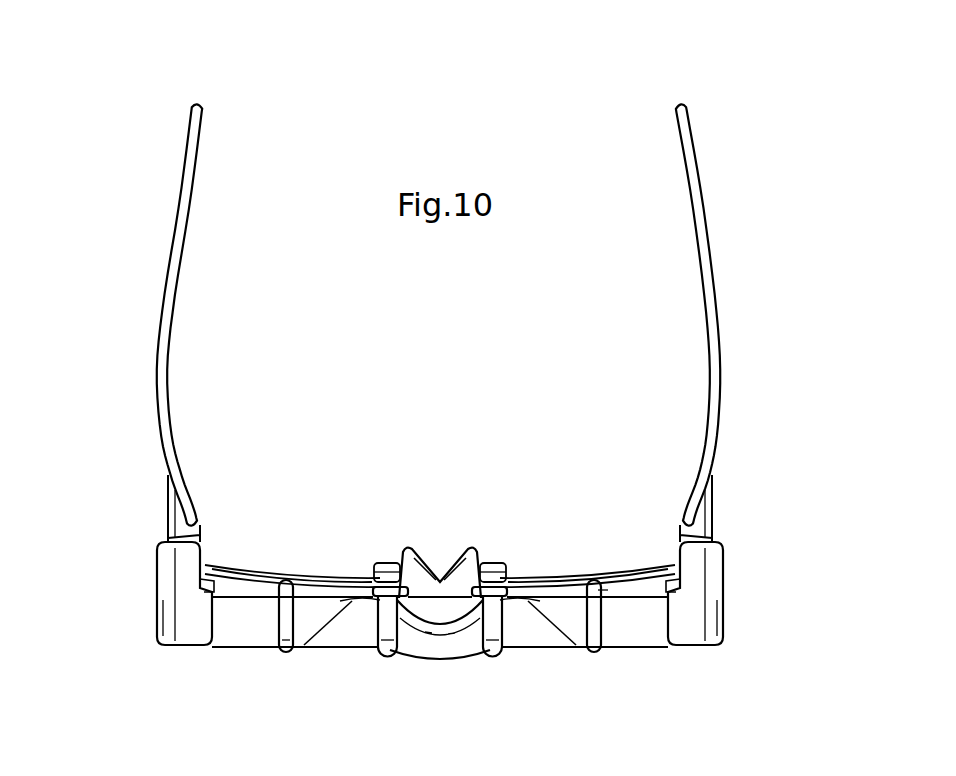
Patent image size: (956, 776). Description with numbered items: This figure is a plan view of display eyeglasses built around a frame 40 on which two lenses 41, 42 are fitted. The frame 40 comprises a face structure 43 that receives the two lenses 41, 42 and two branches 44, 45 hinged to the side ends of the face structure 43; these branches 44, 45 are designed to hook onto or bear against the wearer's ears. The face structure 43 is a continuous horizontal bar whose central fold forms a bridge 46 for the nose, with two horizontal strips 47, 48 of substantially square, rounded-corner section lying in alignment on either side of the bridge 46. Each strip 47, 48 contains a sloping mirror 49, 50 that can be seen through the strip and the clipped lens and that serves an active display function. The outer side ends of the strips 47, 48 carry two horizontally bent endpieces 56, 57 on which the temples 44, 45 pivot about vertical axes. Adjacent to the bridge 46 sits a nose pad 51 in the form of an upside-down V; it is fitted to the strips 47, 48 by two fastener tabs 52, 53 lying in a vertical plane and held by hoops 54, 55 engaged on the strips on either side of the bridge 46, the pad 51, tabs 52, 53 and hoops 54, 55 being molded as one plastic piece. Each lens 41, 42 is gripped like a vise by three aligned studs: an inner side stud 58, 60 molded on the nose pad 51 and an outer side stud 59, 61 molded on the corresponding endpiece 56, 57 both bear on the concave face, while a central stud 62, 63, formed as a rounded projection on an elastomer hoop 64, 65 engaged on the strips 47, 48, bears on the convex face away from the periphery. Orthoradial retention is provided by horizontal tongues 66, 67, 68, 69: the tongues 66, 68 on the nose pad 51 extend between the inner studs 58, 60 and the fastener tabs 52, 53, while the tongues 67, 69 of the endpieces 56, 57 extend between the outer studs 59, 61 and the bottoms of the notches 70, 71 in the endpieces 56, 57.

The frame 40 is at (148, 588).
The lens 41 is at (262, 568).
The lens 42 is at (565, 575).
The face structure 43 is at (224, 640).
The branch 44 is at (178, 258).
The branch 45 is at (707, 262).
The bridge 46 is at (445, 642).
The horizontal strip 47 is at (262, 648).
The horizontal strip 48 is at (635, 648).
The sloping mirror 49 is at (324, 614).
The sloping mirror 50 is at (556, 617).
The nose pad 51 is at (427, 562).
The fastener tab 52 is at (400, 627).
The fastener tab 53 is at (470, 630).
The hoop 54 is at (387, 656).
The hoop 55 is at (497, 656).
The endpiece 56 is at (178, 648).
The endpiece 57 is at (722, 620).
The inner side stud 58 is at (368, 570).
The outer side stud 59 is at (215, 568).
The inner side stud 60 is at (510, 575).
The outer side stud 61 is at (670, 565).
The central stud 62 is at (300, 582).
The central stud 63 is at (605, 578).
The hoop 64 is at (293, 654).
The hoop 65 is at (595, 652).
The tongue 66 is at (392, 570).
The tongue 67 is at (183, 562).
The tongue 68 is at (505, 570).
The tongue 69 is at (700, 575).
The notch 70 is at (208, 592).
The notch 71 is at (690, 600).